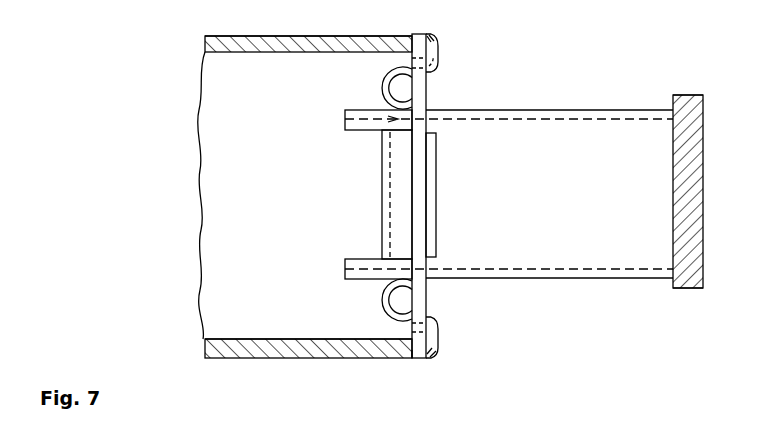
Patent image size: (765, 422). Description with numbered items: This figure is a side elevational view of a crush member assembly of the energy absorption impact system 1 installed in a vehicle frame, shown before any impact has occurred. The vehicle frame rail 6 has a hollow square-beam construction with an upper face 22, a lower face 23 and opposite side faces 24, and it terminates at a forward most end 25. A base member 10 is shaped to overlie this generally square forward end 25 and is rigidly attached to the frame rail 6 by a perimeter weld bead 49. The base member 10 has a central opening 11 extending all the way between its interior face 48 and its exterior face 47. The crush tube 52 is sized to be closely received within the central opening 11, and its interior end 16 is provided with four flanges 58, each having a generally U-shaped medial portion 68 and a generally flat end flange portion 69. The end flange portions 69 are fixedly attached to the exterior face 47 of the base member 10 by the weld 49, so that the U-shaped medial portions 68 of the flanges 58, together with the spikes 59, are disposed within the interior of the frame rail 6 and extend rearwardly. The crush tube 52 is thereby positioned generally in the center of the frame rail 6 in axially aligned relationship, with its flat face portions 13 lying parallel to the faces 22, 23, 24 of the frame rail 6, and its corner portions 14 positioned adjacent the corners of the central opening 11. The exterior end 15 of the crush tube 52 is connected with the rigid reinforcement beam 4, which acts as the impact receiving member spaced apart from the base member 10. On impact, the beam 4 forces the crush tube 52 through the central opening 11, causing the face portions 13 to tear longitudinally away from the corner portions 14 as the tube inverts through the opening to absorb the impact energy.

The energy absorption impact system 1 is at (262, 26).
The reinforcement beam 4 is at (704, 166).
The vehicle frame rail 6 is at (206, 37).
The base member 10 is at (431, 292).
The central opening 11 is at (431, 72).
The face portions 13 is at (565, 200).
The corner portions 14 is at (654, 96).
The exterior end 15 is at (672, 280).
The interior end 16 is at (348, 264).
The upper face 22 is at (341, 36).
The lower face 23 is at (352, 359).
The side faces 24 is at (215, 202).
The forward most end 25 is at (413, 359).
The exterior face 47 is at (428, 101).
The interior face 48 is at (396, 305).
The weld bead 49 is at (434, 40).
The crush tube 52 is at (205, 339).
The flanges 58 is at (396, 196).
The spikes 59 is at (345, 116).
The U-shaped medial portion 68 is at (383, 88).
The end flange portion 69 is at (440, 330).